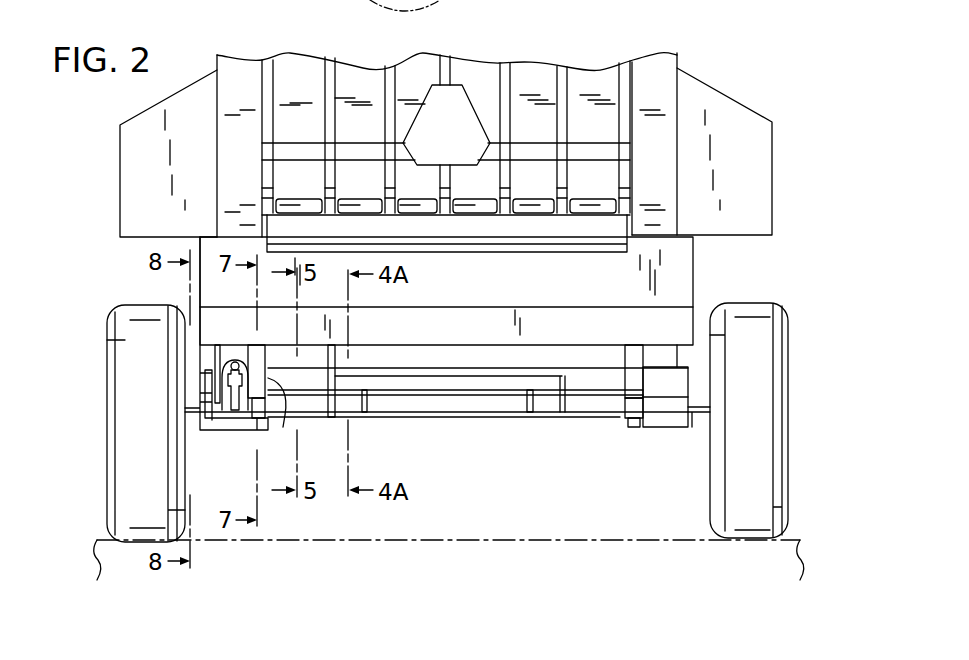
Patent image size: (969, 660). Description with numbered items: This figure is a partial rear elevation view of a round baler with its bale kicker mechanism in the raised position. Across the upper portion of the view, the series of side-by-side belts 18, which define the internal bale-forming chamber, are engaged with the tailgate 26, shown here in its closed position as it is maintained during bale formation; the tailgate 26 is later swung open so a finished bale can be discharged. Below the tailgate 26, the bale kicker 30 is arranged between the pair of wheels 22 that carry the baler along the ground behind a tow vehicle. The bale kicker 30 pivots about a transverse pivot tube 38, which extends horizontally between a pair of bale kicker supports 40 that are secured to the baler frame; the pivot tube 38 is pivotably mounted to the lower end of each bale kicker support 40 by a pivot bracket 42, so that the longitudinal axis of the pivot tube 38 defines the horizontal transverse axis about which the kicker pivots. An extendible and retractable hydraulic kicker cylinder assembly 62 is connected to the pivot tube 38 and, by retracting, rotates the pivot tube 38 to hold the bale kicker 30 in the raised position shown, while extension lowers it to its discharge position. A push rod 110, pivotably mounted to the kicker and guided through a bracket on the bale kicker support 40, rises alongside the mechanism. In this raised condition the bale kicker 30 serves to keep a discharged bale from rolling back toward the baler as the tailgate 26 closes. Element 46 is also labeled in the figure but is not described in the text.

The belts 18 is at (353, 80).
The wheels 22 is at (103, 430).
The tailgate 26 is at (712, 275).
The bale kicker 30 is at (472, 408).
The pivot tube 38 is at (572, 417).
The bale kicker supports 40 is at (270, 380).
The pivot bracket 42 is at (253, 430).
The sleeve 46 is at (440, 397).
The kicker cylinder assembly 62 is at (210, 351).
The push rod 110 is at (213, 362).